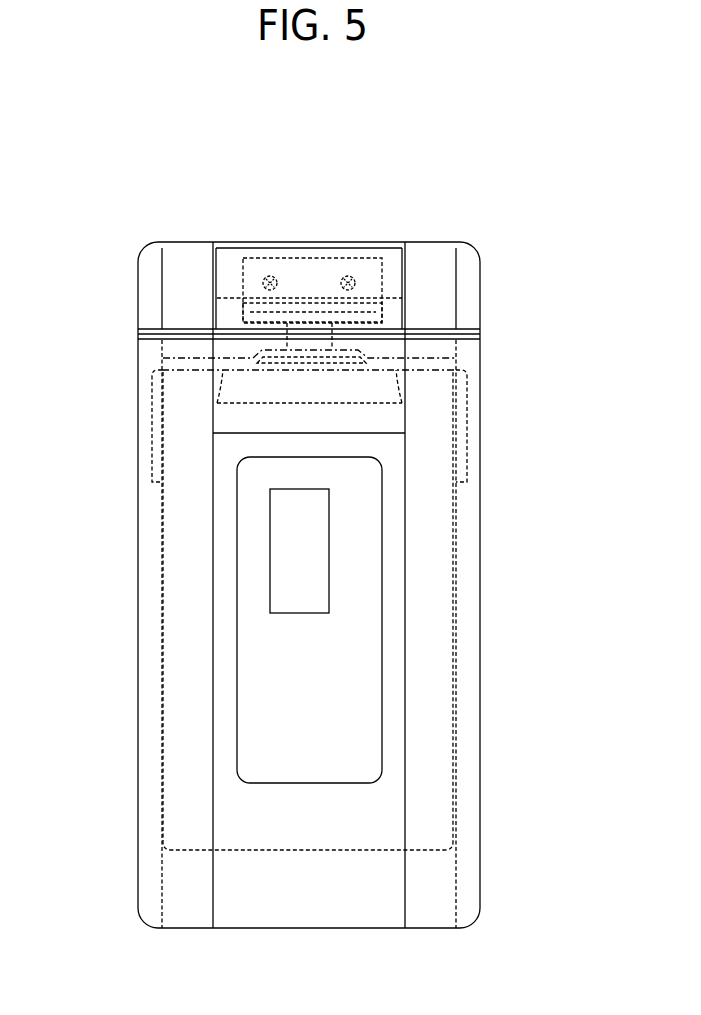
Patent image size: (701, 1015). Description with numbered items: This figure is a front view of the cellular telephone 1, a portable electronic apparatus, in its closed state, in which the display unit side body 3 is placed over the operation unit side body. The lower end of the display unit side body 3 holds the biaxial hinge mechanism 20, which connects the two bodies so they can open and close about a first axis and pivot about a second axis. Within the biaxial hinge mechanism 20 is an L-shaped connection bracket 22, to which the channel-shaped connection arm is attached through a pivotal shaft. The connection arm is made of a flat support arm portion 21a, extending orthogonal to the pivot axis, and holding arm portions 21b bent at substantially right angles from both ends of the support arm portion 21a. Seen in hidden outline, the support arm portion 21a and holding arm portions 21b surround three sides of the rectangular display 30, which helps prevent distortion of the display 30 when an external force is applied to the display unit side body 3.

The cellular telephone 1 is at (466, 178).
The display unit side body 3 is at (472, 547).
The biaxial hinge mechanism 20 is at (364, 238).
The support arm portion 21a is at (193, 358).
The holding arm portions 21b is at (153, 438).
The connection bracket 22 is at (322, 273).
The display 30 is at (430, 850).